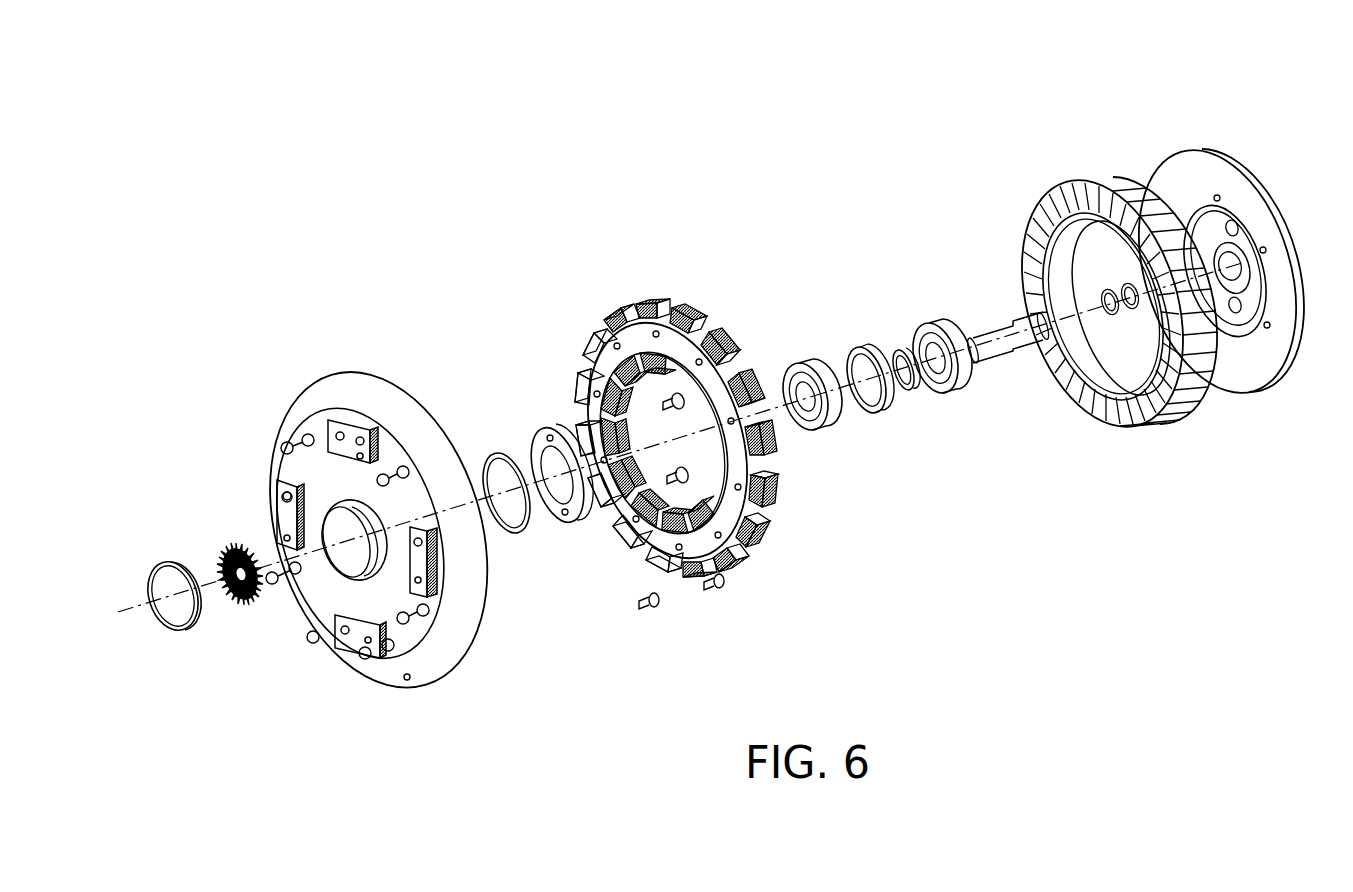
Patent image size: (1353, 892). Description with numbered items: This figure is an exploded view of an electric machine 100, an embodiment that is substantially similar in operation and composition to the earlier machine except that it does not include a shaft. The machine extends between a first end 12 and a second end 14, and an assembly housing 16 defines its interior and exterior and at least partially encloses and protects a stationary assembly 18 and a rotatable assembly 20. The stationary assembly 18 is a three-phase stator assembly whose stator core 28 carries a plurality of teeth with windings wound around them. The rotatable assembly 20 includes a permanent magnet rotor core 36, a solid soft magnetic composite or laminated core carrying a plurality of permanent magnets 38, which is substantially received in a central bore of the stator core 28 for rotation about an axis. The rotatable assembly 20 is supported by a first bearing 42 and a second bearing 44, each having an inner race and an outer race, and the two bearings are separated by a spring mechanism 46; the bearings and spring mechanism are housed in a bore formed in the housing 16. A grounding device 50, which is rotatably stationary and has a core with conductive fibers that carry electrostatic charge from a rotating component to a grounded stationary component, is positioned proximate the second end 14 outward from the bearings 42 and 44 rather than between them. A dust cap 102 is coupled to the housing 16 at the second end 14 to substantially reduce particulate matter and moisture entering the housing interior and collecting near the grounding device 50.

The electric machine 100 is at (367, 203).
The first end 12 is at (1267, 160).
The second end 14 is at (215, 450).
The assembly housing 16 is at (317, 398).
The stationary assembly 18 is at (240, 410).
The rotatable assembly 20 is at (1223, 83).
The stator core 28 is at (653, 315).
The permanent magnet rotor core 36 is at (1328, 422).
The permanent magnets 38 is at (1057, 197).
The first bearing 42 is at (940, 325).
The second bearing 44 is at (808, 362).
The spring mechanism 46 is at (880, 405).
The grounding device 50 is at (235, 597).
The dust cap 102 is at (162, 610).